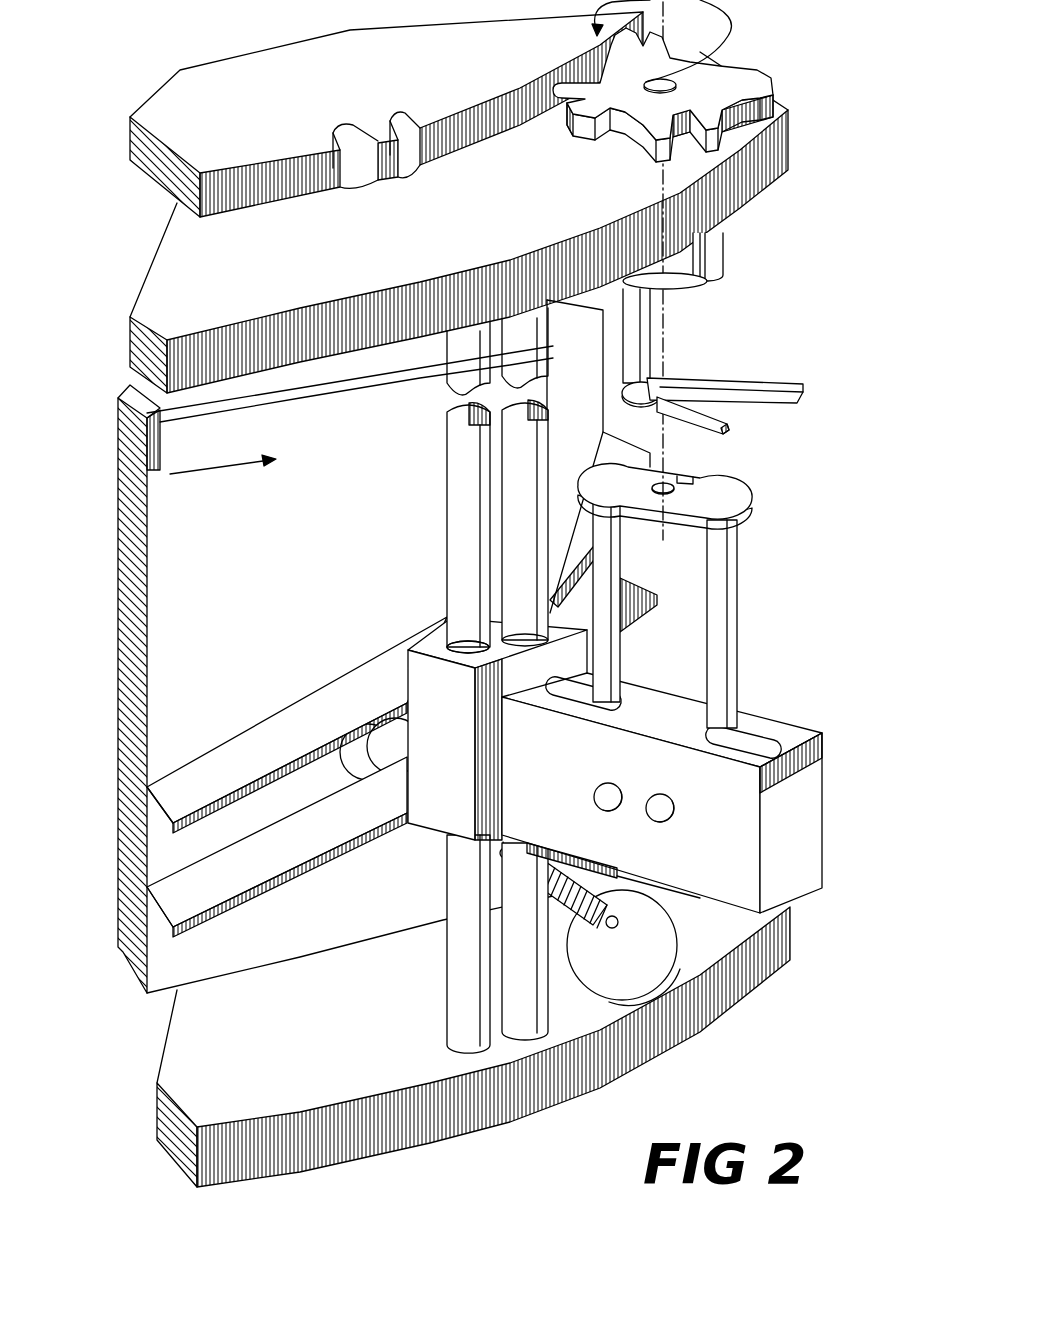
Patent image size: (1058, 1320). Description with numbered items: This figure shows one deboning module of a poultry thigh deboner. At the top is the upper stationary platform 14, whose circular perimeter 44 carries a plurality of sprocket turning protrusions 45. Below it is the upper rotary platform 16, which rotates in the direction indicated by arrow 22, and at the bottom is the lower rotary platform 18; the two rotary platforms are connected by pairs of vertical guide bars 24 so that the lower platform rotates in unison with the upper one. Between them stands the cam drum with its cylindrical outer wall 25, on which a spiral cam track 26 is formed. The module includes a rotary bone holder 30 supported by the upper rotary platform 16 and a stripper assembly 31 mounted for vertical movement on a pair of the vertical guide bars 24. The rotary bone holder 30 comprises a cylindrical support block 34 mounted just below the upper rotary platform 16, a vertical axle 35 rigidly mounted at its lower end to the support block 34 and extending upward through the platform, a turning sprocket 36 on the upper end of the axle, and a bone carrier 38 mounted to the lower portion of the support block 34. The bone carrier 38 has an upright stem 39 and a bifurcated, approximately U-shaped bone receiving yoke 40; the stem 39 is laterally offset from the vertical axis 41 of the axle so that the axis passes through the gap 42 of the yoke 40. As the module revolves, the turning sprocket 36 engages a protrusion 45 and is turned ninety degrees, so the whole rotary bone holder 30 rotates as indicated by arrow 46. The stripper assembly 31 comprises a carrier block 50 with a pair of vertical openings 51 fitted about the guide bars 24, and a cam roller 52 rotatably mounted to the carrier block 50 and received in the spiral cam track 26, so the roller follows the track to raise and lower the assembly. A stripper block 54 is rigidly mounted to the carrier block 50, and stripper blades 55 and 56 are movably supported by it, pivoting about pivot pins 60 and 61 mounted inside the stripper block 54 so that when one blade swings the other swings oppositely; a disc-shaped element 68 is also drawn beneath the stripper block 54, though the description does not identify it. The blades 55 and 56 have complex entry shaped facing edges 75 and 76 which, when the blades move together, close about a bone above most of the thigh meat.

The upper stationary platform 14 is at (386, 125).
The upper rotary platform 16 is at (755, 140).
The lower rotary platform 18 is at (250, 1077).
The arrow 22 is at (221, 468).
The vertical guide bars 24 is at (472, 502).
The cylindrical outer wall 25 is at (210, 569).
The spiral cam track 26 is at (207, 773).
The rotary bone holder 30 is at (687, 271).
The stripper assembly 31 is at (712, 582).
The cylindrical support block 34 is at (724, 236).
The vertical axle 35 is at (676, 77).
The turning sprocket 36 is at (663, 95).
The bone carrier 38 is at (725, 220).
The upright stem 39 is at (633, 350).
The bone receiving yoke 40 is at (755, 384).
The vertical axis 41 is at (666, 342).
The gap 42 is at (703, 407).
The perimeter 44 is at (292, 203).
The sprocket turning protrusions 45 is at (398, 186).
The arrow 46 is at (729, 13).
The carrier block 50 is at (489, 680).
The vertical openings 51 is at (500, 652).
The cam roller 52 is at (378, 785).
The stripper block 54 is at (682, 793).
The stripper blade 55 is at (629, 466).
The stripper blade 56 is at (674, 482).
The pivot pin 60 is at (614, 790).
The pivot pin 61 is at (660, 805).
The disc weight 68 is at (662, 946).
The facing edge 75 is at (667, 480).
The facing edge 76 is at (683, 480).